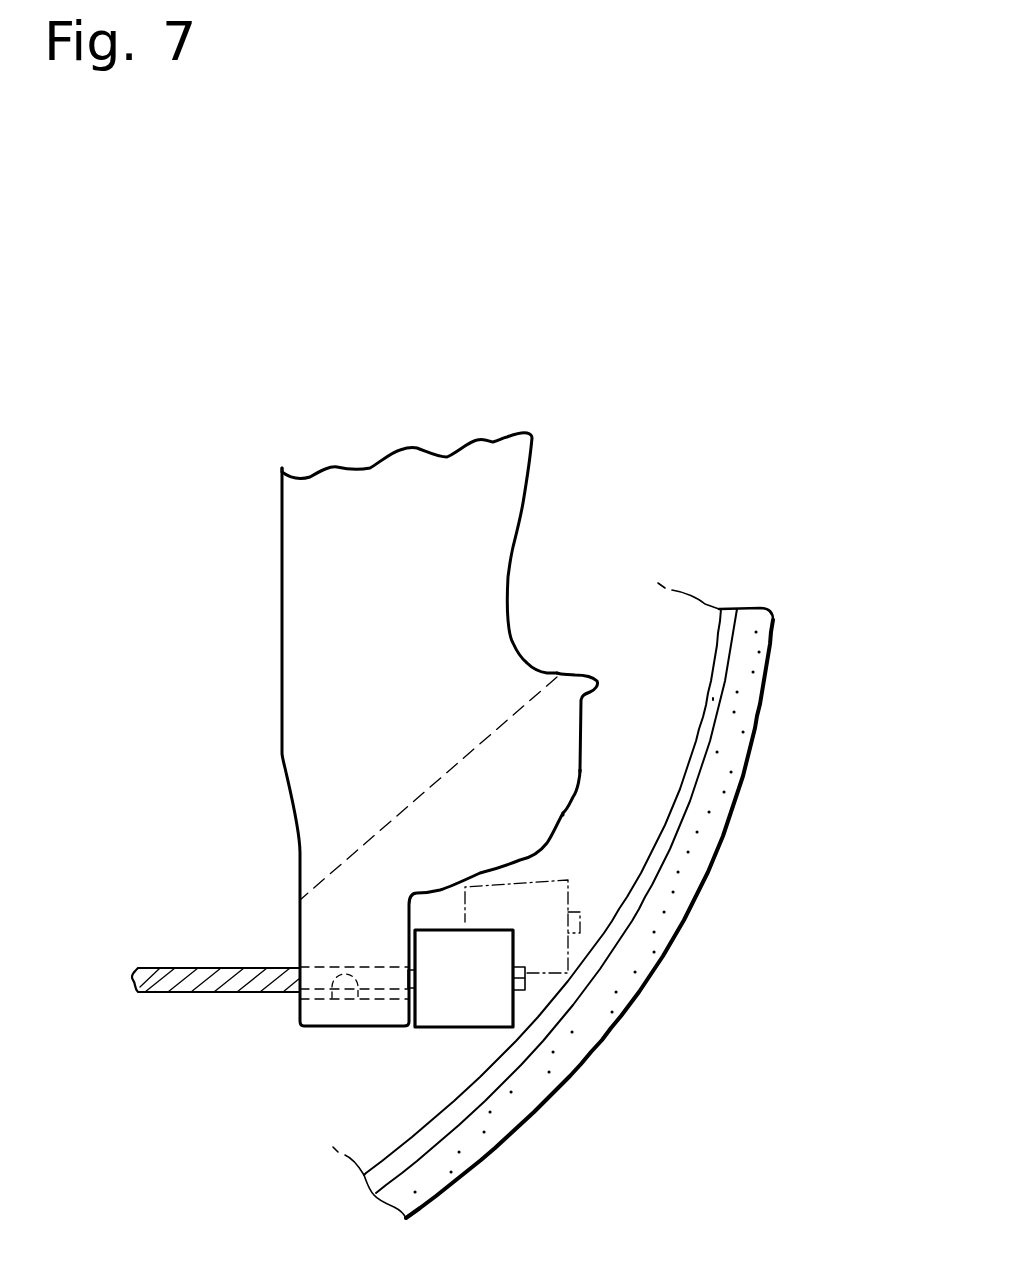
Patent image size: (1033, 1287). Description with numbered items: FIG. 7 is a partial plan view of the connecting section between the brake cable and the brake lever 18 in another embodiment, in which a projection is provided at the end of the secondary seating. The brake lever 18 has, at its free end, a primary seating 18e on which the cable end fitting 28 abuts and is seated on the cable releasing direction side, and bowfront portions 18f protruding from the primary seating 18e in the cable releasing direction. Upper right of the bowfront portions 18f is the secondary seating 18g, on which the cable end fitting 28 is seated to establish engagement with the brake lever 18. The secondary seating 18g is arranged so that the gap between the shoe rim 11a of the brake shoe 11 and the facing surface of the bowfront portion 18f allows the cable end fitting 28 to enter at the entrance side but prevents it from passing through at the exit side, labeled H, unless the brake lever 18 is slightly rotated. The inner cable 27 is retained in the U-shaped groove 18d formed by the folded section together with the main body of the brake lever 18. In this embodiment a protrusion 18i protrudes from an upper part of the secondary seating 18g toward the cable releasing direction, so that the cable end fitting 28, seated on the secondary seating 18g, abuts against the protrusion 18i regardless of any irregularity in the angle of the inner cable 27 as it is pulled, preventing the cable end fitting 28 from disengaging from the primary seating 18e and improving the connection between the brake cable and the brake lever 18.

The brake lever 18 is at (415, 446).
The protrusion 18i is at (590, 677).
The U-shaped groove 18d is at (350, 1008).
The primary seating 18e is at (418, 951).
The bowfront portion 18f is at (560, 810).
The secondary seating 18g is at (585, 758).
The inner cable 27 is at (193, 995).
The cable end fitting 28 is at (513, 1005).
The brake shoe 11 is at (773, 658).
The shoe rim 11a is at (713, 698).